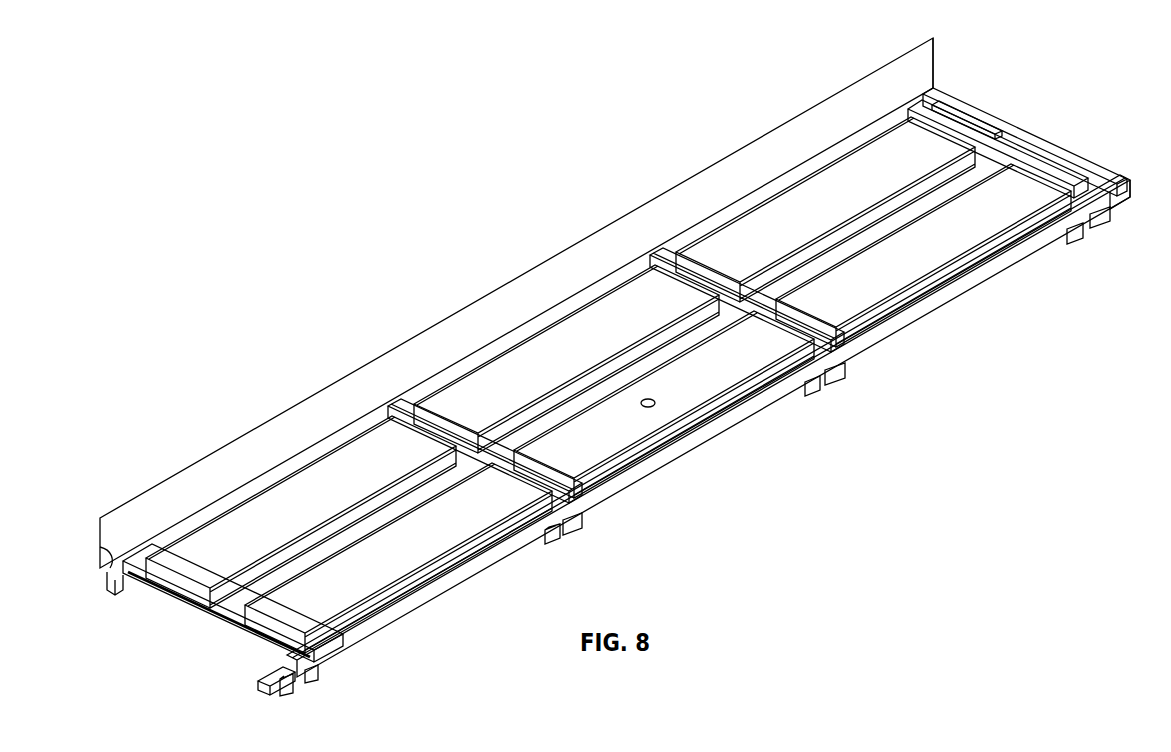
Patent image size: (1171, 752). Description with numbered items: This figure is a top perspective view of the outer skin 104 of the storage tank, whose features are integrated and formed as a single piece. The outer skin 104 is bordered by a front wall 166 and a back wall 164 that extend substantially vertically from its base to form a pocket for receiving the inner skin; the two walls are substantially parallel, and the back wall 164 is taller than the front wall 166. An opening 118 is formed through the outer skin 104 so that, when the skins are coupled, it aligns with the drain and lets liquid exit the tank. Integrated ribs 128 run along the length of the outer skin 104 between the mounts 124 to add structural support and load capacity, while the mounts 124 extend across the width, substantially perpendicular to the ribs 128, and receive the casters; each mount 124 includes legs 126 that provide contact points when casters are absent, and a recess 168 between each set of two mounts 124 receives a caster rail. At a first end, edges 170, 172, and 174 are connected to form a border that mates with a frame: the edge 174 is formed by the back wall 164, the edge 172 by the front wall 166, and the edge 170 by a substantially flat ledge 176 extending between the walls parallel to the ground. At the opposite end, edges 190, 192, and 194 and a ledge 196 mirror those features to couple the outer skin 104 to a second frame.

The outer skin 104 is at (388, 192).
The opening 118 is at (650, 400).
The mounts 124 is at (253, 658).
The legs 126 is at (281, 690).
The ribs 128 is at (660, 353).
The back wall 164 is at (220, 478).
The front wall 166 is at (398, 608).
The recess 168 is at (396, 407).
The edge 170 is at (185, 625).
The edge 172 is at (270, 678).
The edge 174 is at (100, 524).
The ledge 176 is at (110, 562).
The edge 190 is at (1032, 131).
The edge 192 is at (1133, 183).
The edge 194 is at (936, 58).
The ledge 196 is at (1060, 163).